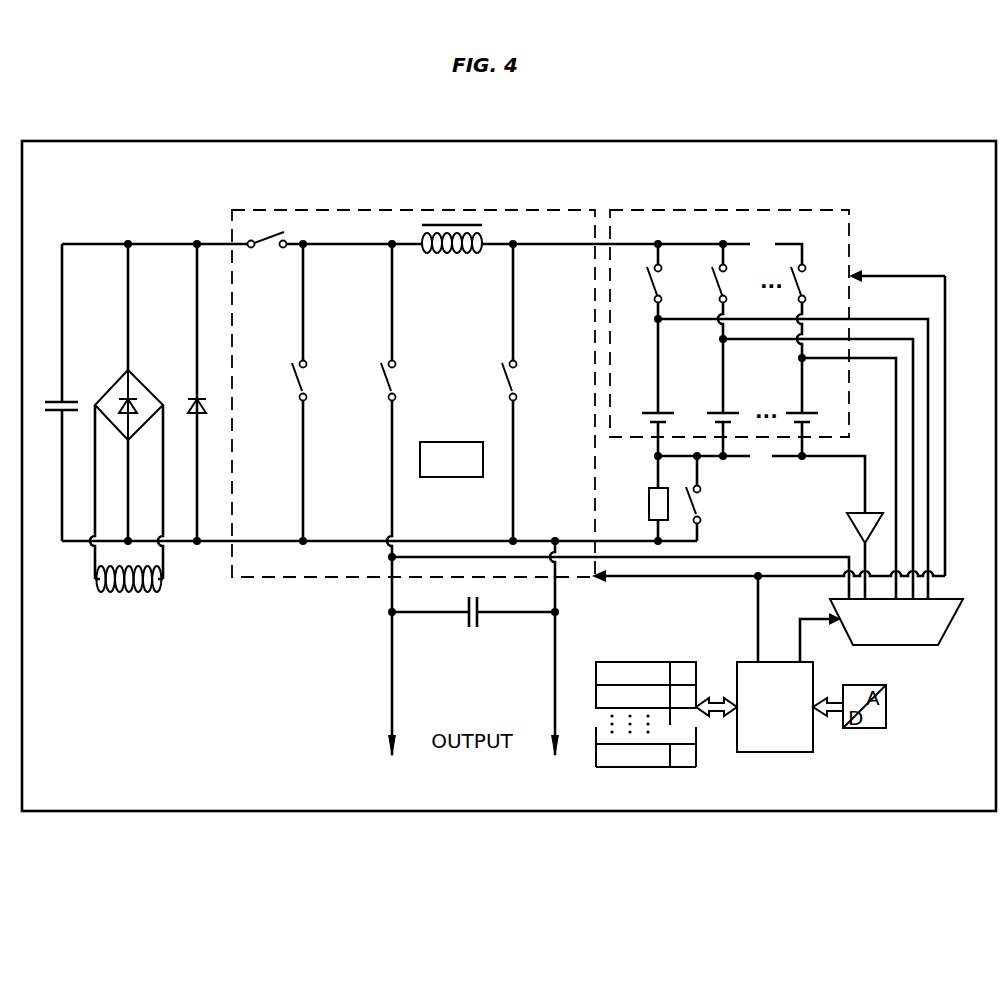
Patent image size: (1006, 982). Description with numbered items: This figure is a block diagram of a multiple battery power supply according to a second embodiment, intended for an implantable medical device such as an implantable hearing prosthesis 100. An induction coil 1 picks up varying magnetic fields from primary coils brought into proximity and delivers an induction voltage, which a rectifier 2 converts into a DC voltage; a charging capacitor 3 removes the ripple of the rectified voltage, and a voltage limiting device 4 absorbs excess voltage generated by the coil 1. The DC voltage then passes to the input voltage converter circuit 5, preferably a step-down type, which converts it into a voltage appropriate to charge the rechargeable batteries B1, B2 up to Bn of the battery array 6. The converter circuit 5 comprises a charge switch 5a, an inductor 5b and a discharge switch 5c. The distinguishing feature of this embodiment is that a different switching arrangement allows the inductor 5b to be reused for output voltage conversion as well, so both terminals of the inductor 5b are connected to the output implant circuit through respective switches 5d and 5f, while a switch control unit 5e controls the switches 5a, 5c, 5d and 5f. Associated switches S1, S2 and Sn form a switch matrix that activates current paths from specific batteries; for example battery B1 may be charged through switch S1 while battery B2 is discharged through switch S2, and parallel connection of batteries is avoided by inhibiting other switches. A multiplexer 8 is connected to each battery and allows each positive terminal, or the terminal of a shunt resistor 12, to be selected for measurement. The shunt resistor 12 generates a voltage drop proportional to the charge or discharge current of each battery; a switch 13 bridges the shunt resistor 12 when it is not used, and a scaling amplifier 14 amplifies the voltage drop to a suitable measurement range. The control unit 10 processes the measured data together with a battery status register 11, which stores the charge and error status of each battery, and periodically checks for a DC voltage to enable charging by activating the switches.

The implantable hearing prosthesis 100 is at (134, 141).
The induction coil 1 is at (128, 593).
The rectifier 2 is at (153, 421).
The charging capacitor 3 is at (54, 402).
The voltage limiting device 4 is at (200, 397).
The input voltage converter circuit 5 is at (247, 196).
The charge switch 5a is at (266, 250).
The inductor 5b is at (450, 255).
The discharge switch 5c is at (308, 384).
The switch 5d is at (397, 384).
The switch control unit 5e is at (451, 459).
The switch 5f is at (518, 384).
The array of rechargeable batteries 6 is at (626, 198).
The switch S1 is at (667, 284).
The switch S2 is at (732, 284).
The switch Sn is at (811, 284).
The rechargeable battery B1 is at (652, 403).
The rechargeable battery B2 is at (717, 403).
The rechargeable battery Bn is at (795, 403).
The multiplexer 8 is at (896, 622).
The control unit 10 is at (775, 707).
The battery status register 11 is at (608, 662).
The shunt resistor 12 is at (649, 510).
The switch 13 is at (702, 504).
The scaling amplifier 14 is at (856, 532).